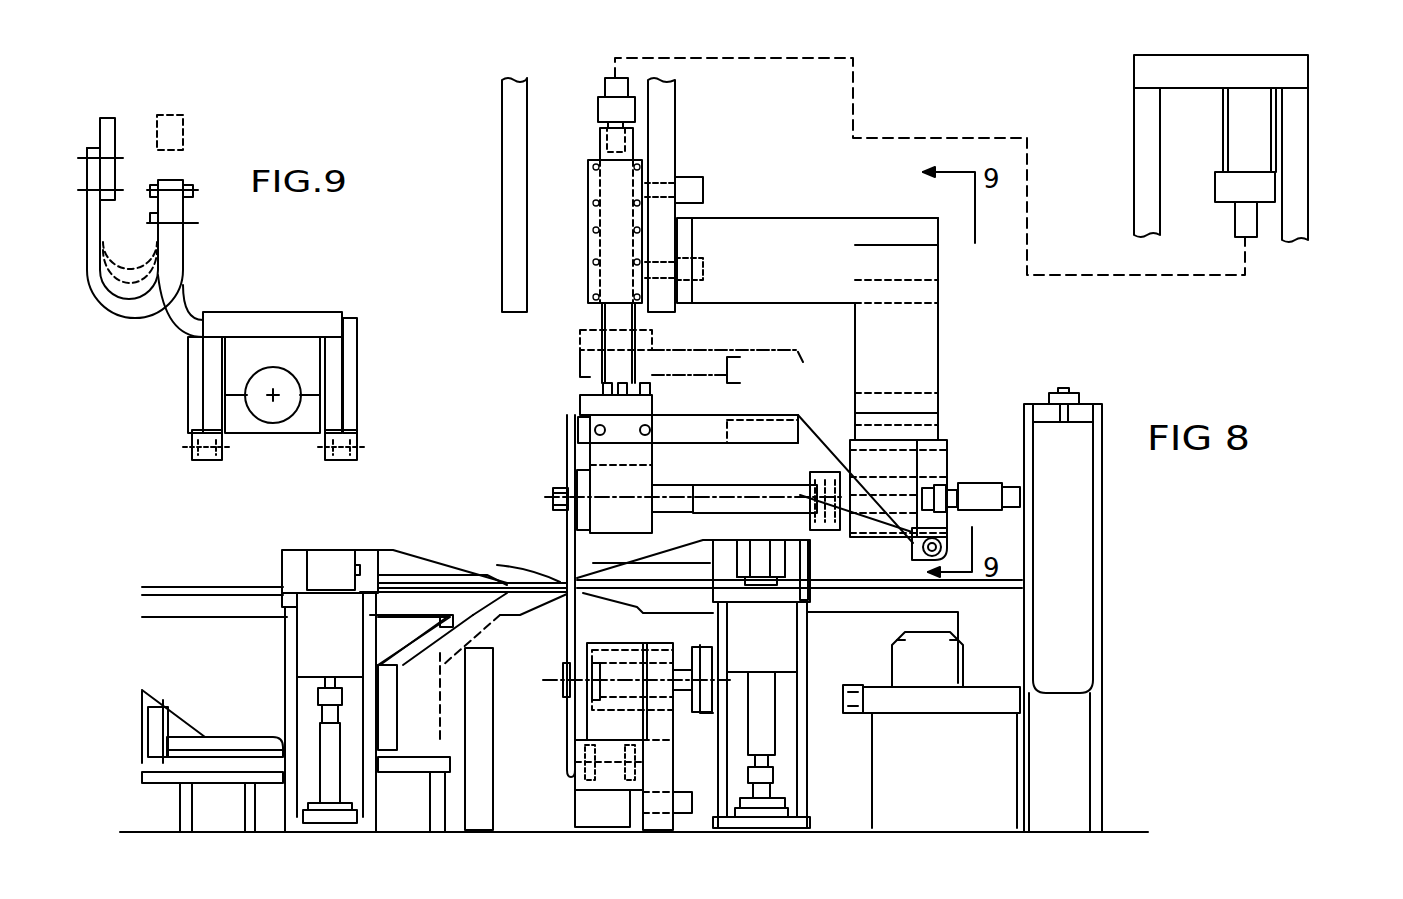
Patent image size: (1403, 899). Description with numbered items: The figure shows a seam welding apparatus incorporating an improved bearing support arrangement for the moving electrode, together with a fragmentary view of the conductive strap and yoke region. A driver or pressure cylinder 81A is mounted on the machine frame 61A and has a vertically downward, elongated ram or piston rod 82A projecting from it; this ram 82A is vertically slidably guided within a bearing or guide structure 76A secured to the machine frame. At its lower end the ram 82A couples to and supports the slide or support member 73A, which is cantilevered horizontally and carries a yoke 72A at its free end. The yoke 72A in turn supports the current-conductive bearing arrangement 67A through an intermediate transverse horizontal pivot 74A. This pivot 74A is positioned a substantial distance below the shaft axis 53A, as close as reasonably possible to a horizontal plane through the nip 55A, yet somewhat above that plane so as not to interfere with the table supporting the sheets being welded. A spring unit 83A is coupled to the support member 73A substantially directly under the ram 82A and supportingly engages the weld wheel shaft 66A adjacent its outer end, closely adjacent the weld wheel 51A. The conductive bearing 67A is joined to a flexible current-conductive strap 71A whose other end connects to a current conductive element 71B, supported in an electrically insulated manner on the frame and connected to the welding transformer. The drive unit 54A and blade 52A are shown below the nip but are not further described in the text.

In FIG. 8, the weld wheel 51A is at (578, 428).
In FIG. 8, the cutting blade 52A is at (565, 630).
In FIG. 8, the shaft axis 53A is at (747, 500).
In FIG. 8, the blade drive unit 54A is at (628, 680).
In FIG. 8, the nip 55A is at (565, 575).
In FIG. 8, the machine frame 61A is at (1300, 75).
In FIG. 8, the weld wheel shaft 66A is at (713, 487).
In FIG. 9, the current-conductive bearing arrangement 67A is at (277, 345).
In FIG. 8, the current-conductive bearing arrangement 67A is at (897, 463).
In FIG. 9, the flexible current-conductive strap 71A is at (93, 245).
In FIG. 8, the flexible current-conductive strap 71A is at (938, 348).
In FIG. 8, the current conductive element 71B is at (763, 227).
In FIG. 9, the yoke 72A is at (193, 368).
In FIG. 8, the yoke 72A is at (813, 452).
In FIG. 8, the support member 73A is at (708, 420).
In FIG. 9, the pivot 74A is at (213, 453).
In FIG. 8, the pivot 74A is at (915, 548).
In FIG. 8, the guide structure 76A is at (612, 237).
In FIG. 8, the pressure cylinder 81A is at (1262, 142).
In FIG. 8, the ram 82A is at (608, 312).
In FIG. 8, the spring unit 83A is at (605, 488).